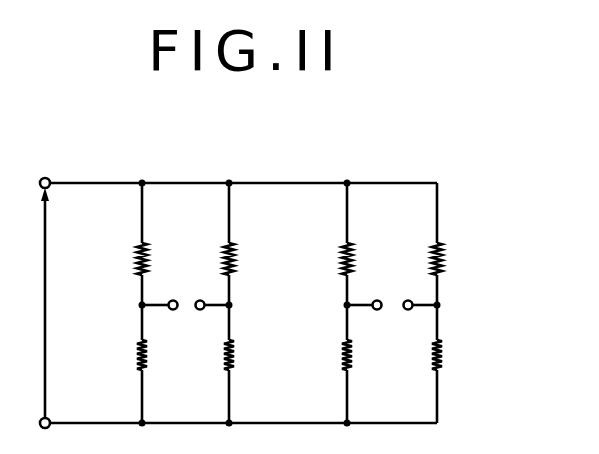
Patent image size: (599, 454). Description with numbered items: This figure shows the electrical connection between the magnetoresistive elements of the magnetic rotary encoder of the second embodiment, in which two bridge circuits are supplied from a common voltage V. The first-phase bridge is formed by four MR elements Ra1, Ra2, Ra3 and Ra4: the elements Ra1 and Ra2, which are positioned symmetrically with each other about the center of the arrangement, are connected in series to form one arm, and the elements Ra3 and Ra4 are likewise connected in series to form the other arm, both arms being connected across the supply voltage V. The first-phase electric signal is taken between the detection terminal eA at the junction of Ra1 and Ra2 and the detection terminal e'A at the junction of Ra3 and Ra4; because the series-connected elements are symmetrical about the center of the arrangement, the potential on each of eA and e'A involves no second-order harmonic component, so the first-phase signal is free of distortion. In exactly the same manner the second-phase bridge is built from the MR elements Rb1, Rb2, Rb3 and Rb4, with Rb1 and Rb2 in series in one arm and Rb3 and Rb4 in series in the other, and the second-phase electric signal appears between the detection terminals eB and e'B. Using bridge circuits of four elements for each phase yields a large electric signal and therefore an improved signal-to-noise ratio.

The supply voltage V is at (34, 303).
The MR element Ra1 is at (140, 264).
The MR element Ra2 is at (140, 360).
The MR element Ra3 is at (227, 266).
The MR element Ra4 is at (227, 358).
The MR element Rb1 is at (345, 260).
The MR element Rb2 is at (345, 357).
The MR element Rb3 is at (435, 266).
The MR element Rb4 is at (440, 356).
The detection terminal eA is at (173, 299).
The detection terminal e'A is at (182, 327).
The detection terminal eB is at (377, 299).
The detection terminal e'B is at (390, 327).